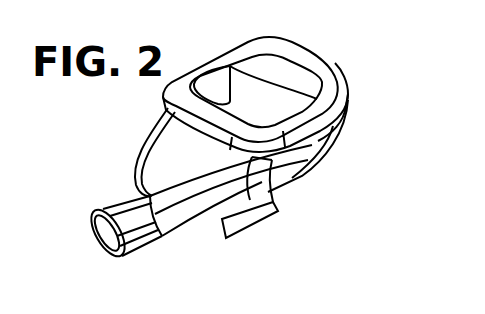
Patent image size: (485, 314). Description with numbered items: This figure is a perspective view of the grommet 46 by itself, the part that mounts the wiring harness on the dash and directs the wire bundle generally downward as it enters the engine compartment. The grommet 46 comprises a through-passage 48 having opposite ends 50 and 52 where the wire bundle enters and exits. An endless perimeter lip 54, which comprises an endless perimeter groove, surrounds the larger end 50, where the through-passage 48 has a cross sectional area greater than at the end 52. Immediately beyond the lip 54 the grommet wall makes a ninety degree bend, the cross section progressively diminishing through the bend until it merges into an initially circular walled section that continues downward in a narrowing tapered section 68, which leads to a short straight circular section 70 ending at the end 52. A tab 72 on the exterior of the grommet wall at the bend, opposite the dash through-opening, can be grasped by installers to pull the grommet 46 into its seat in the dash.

The grommet 46 is at (333, 60).
The through-passage 48 is at (256, 97).
The end of through-passage 50 is at (266, 56).
The end of through-passage 52 is at (108, 258).
The endless perimeter lip 54 is at (348, 103).
The narrowing tapered section 68 is at (183, 223).
The short straight circular section 70 is at (137, 200).
The tab 72 is at (260, 216).